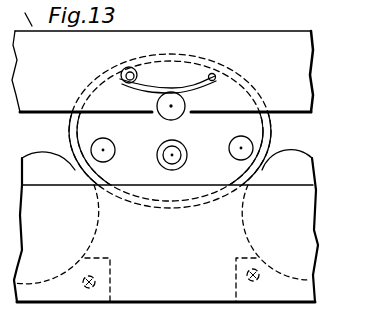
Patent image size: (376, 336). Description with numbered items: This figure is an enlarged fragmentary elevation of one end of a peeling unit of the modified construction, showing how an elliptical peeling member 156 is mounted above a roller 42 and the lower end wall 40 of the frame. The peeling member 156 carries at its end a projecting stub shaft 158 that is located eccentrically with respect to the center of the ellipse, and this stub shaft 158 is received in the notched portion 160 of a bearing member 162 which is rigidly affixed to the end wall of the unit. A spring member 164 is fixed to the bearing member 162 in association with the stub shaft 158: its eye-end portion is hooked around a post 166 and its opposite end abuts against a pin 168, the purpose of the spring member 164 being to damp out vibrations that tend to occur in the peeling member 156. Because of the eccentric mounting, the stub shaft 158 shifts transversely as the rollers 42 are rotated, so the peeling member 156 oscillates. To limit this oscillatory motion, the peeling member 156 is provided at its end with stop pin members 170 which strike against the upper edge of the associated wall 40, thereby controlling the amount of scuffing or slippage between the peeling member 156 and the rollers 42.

The lower end wall 40 is at (180, 278).
The roller members 42 is at (40, 173).
The peeling members 156 is at (276, 141).
The stub shafts 158 is at (174, 106).
The notched portion 160 is at (158, 113).
The bearing members 162 is at (271, 40).
The spring member 164 is at (154, 110).
The post 166 is at (122, 70).
The pin 168 is at (215, 74).
The stop pin members 170 is at (103, 149).